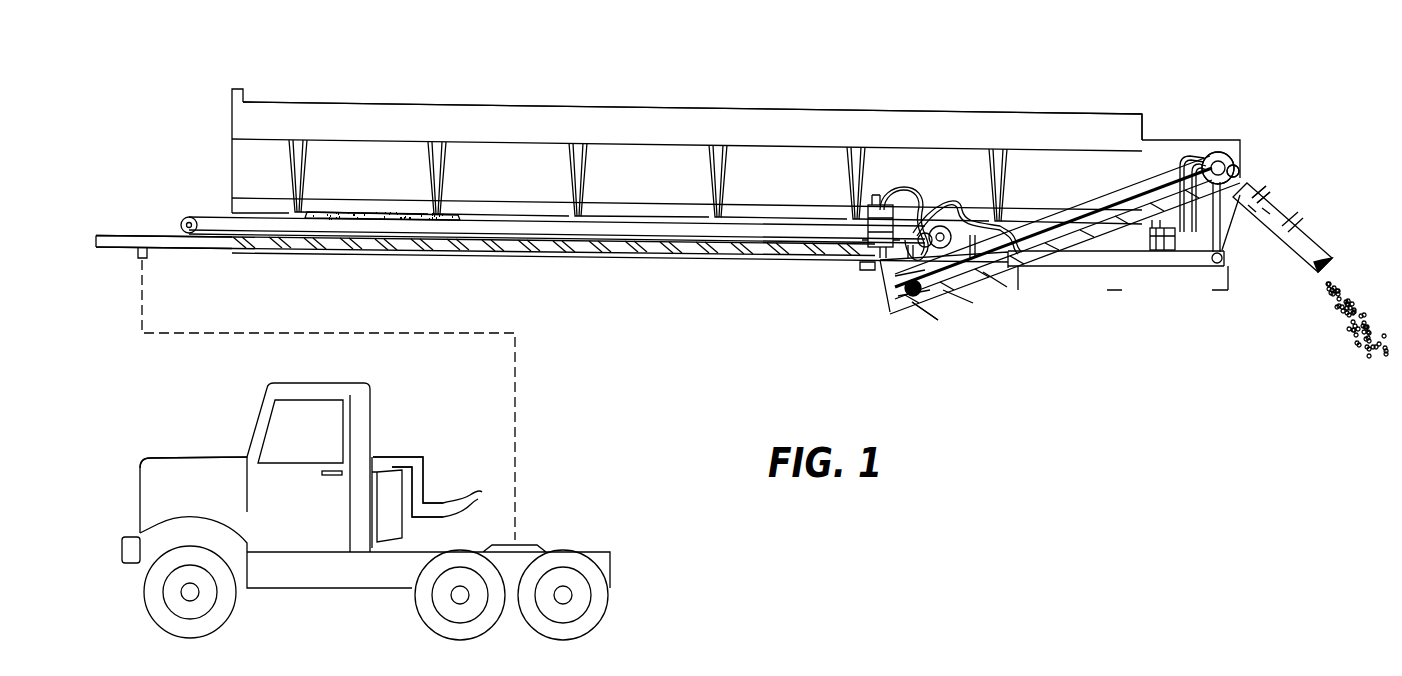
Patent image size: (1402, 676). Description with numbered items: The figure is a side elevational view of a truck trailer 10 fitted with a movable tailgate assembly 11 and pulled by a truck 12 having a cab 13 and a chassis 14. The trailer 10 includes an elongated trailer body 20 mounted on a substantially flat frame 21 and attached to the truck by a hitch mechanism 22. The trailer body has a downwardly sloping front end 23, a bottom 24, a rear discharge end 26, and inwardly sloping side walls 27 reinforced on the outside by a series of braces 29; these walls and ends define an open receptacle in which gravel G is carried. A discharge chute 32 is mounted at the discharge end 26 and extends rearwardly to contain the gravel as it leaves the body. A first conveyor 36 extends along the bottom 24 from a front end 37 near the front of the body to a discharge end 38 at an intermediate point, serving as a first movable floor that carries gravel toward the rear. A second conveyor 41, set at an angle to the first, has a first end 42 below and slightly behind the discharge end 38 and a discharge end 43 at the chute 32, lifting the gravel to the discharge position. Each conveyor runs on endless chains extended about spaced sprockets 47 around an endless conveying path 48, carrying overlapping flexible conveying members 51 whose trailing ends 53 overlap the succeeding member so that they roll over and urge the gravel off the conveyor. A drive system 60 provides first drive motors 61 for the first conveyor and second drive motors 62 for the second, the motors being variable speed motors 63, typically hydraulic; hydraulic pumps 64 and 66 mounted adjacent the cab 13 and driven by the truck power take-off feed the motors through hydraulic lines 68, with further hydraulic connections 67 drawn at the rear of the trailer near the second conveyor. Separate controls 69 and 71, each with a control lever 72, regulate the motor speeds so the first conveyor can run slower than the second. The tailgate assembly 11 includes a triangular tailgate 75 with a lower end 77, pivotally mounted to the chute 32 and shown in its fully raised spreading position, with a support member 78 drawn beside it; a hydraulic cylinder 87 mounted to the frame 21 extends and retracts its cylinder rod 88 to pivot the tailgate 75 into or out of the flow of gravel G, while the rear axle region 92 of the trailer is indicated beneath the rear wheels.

The truck trailer 10 is at (777, 82).
The movable tailgate assembly 11 is at (1260, 181).
The truck 12 is at (334, 382).
The cab 13 is at (197, 457).
The chassis 14 is at (308, 576).
The trailer body 20 is at (500, 130).
The frame 21 is at (455, 257).
The hitch mechanism 22 is at (138, 254).
The front end 23 is at (230, 96).
The bottom 24 is at (153, 262).
The discharge end 26 is at (1142, 118).
The side wall 27 is at (590, 122).
The braces 29 is at (580, 178).
The discharge chute 32 is at (1163, 140).
The first conveyor 36 is at (720, 224).
The front end 37 is at (182, 222).
The discharge end 38 is at (878, 272).
The second conveyor 41 is at (1069, 224).
The first end 42 is at (883, 307).
The discharge end 43 is at (1230, 167).
The sprockets 47 is at (163, 242).
The endless conveying path 48 is at (189, 216).
The conveying members 51 is at (537, 249).
The trailing end 53 is at (932, 313).
The drive system 60 is at (918, 190).
The first drive motors 61 is at (955, 205).
The second drive motors 62 is at (1217, 152).
The variable speed motors 63 is at (945, 224).
The hydraulic pump 64 is at (388, 523).
The hydraulic pump 66 is at (375, 475).
The hydraulic lines 67 is at (1213, 160).
The hydraulic lines 68 is at (898, 192).
The controls 69 is at (857, 234).
The controls 71 is at (1170, 260).
The control lever 72 is at (868, 216).
The tailgate 75 is at (1320, 251).
The lower end 77 is at (1326, 283).
The chute support 78 is at (1235, 202).
The hydraulic cylinder 87 is at (1224, 232).
The cylinder rod 88 is at (1262, 202).
The rear axle assembly 92 is at (1138, 298).
The gravel G is at (455, 211).